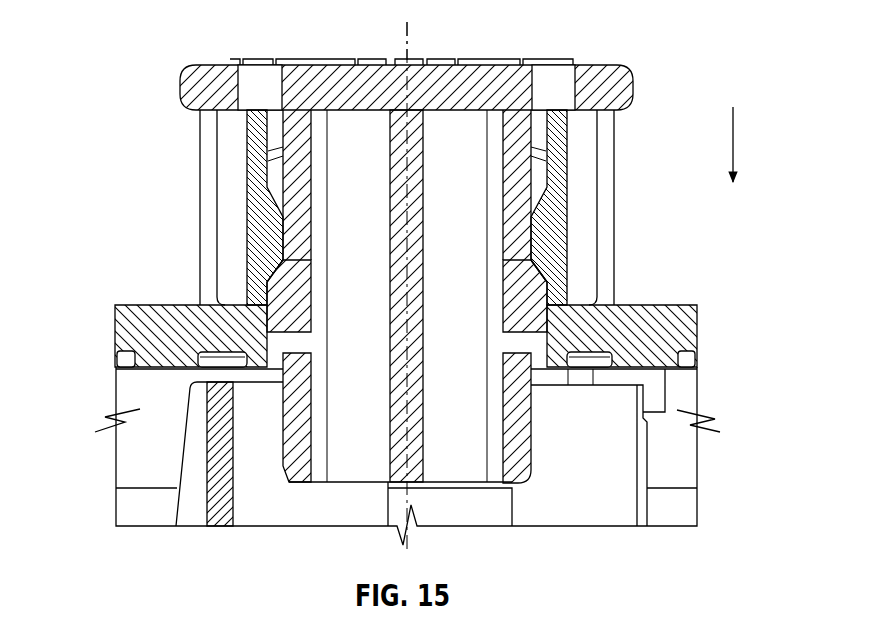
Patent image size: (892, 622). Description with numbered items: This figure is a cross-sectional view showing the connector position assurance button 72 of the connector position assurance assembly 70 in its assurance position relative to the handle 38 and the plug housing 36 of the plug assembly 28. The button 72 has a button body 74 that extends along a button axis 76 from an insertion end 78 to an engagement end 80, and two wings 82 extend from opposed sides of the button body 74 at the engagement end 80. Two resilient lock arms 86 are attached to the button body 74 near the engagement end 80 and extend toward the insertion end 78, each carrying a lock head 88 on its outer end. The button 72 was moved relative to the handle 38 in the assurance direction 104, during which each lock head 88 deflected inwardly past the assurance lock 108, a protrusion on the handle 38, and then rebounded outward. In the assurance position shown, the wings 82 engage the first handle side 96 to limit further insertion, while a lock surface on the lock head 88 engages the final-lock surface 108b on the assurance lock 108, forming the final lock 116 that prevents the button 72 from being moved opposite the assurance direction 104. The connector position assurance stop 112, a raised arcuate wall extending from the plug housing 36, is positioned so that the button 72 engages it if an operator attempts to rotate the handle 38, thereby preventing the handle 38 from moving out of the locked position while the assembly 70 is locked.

The plug assembly 28 is at (754, 206).
The plug housing 36 is at (128, 506).
The handle 38 is at (157, 305).
The connector position assurance assembly 70 is at (125, 38).
The connector position assurance button 72 is at (486, 68).
The button body 74 is at (533, 428).
The button axis 76 is at (393, 61).
The insertion end 78 is at (440, 485).
The engagement end 80 is at (430, 66).
The wings 82 is at (198, 77).
The lock arms 86 is at (282, 182).
The lock head 88 is at (285, 309).
The first handle side 96 is at (672, 305).
The assurance direction 104 is at (733, 146).
The assurance lock 108 is at (276, 243).
The final-lock surface 108b is at (540, 262).
The connector position assurance stop 112 is at (277, 450).
The final lock 116 is at (551, 271).